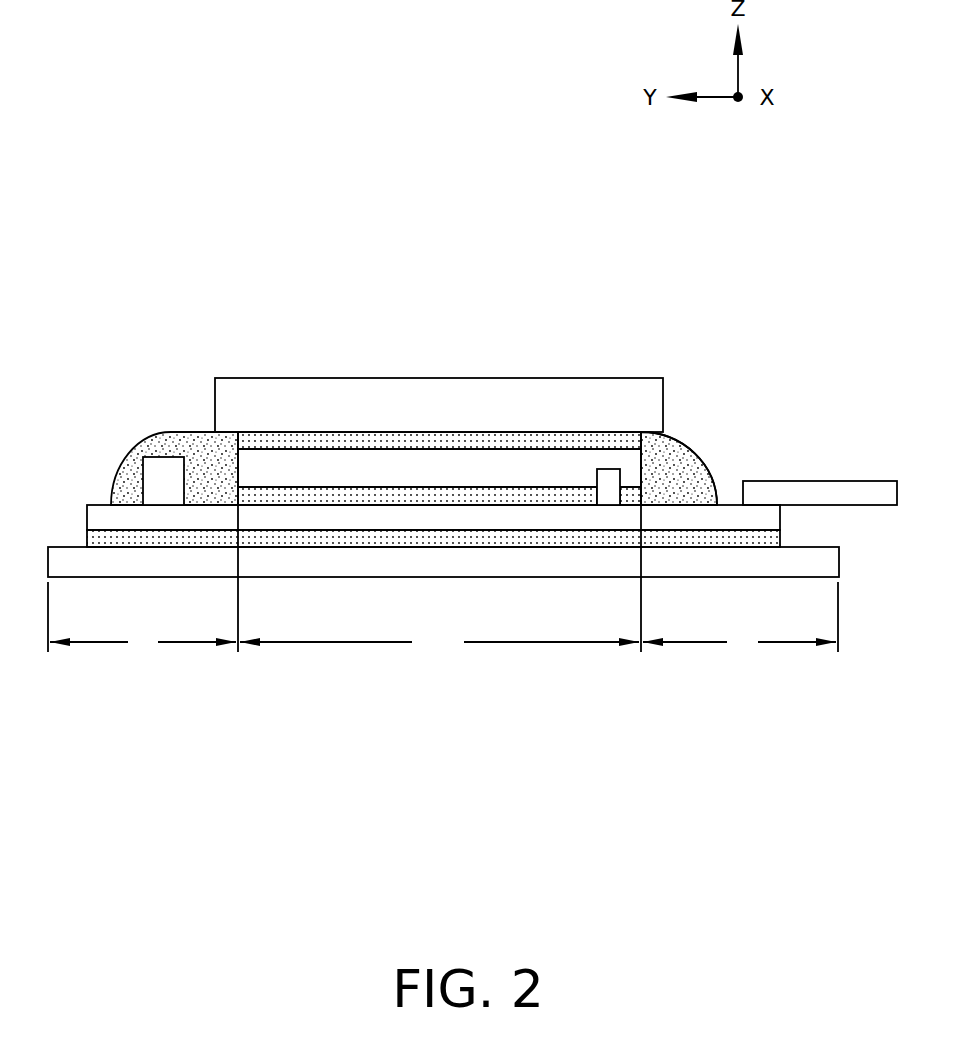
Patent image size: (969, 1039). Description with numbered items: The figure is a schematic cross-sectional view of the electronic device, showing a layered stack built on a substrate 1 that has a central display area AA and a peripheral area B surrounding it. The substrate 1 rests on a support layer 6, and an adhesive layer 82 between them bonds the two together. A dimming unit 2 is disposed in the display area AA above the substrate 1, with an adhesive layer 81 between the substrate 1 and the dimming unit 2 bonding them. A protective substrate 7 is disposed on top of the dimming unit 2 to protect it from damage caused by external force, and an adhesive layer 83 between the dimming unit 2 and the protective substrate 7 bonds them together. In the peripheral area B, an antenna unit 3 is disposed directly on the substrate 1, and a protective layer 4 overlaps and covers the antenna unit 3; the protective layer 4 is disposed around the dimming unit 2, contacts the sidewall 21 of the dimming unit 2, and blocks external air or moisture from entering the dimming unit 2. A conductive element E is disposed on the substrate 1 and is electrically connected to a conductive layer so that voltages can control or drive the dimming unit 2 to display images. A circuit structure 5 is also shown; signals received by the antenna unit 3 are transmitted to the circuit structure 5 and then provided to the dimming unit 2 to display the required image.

The substrate 1 is at (770, 517).
The dimming unit 2 is at (545, 460).
The sidewall 21 is at (645, 466).
The antenna unit 3 is at (147, 483).
The protective layer 4 is at (131, 463).
The circuit structure 5 is at (860, 490).
The support layer 6 is at (828, 560).
The protective substrate 7 is at (293, 392).
The adhesive layer 81 is at (437, 497).
The adhesive layer 82 is at (95, 540).
The adhesive layer 83 is at (375, 440).
The conductive element E is at (609, 470).
The peripheral area B is at (443, 544).
The display area AA is at (439, 642).